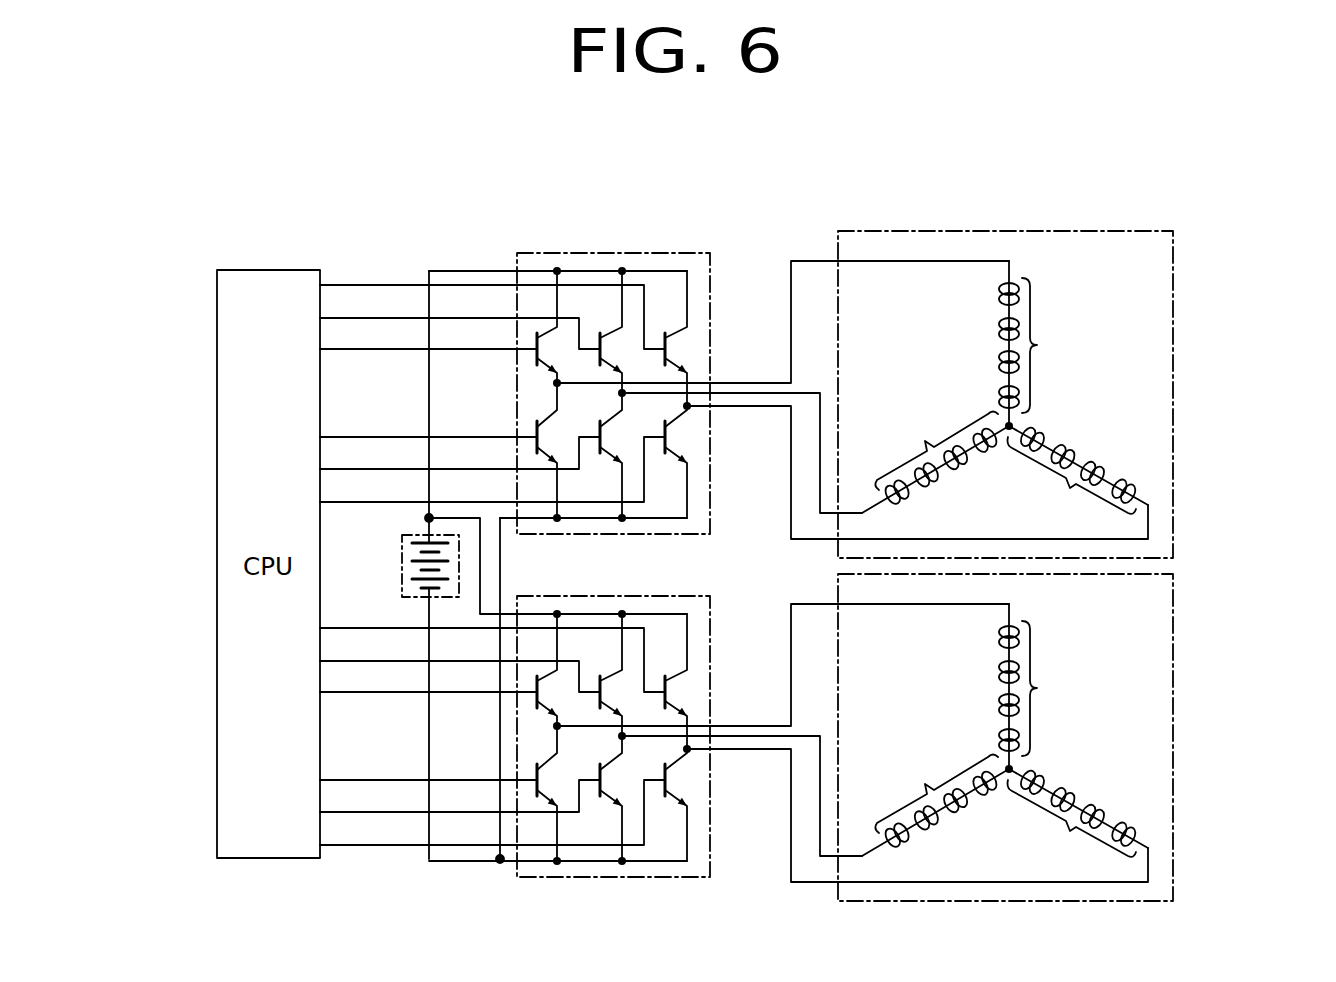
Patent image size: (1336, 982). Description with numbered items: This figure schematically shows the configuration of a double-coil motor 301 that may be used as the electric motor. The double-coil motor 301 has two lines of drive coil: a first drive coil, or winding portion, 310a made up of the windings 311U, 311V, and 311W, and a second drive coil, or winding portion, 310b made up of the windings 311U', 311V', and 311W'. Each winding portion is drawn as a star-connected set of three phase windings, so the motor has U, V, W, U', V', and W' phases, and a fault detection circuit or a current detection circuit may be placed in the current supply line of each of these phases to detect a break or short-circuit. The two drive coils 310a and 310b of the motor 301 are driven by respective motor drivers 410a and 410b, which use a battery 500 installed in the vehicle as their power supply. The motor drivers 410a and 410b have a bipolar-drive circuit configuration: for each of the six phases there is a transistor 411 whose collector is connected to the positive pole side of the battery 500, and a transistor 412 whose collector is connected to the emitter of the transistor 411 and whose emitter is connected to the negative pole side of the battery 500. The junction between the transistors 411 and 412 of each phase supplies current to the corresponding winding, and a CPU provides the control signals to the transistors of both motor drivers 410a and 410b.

The double-coil motor 301 is at (1059, 514).
The drive coil 310a is at (1059, 394).
The drive coil 310b is at (1059, 737).
The winding 311U is at (975, 345).
The winding 311V is at (938, 469).
The winding 311W is at (1080, 454).
The winding 311U' is at (975, 688).
The winding 311V' is at (941, 811).
The winding 311W' is at (1083, 799).
The motor driver 410a is at (670, 232).
The motor driver 410b is at (670, 575).
The transistor 411 is at (537, 362).
The transistor 412 is at (537, 424).
The battery 500 is at (402, 583).